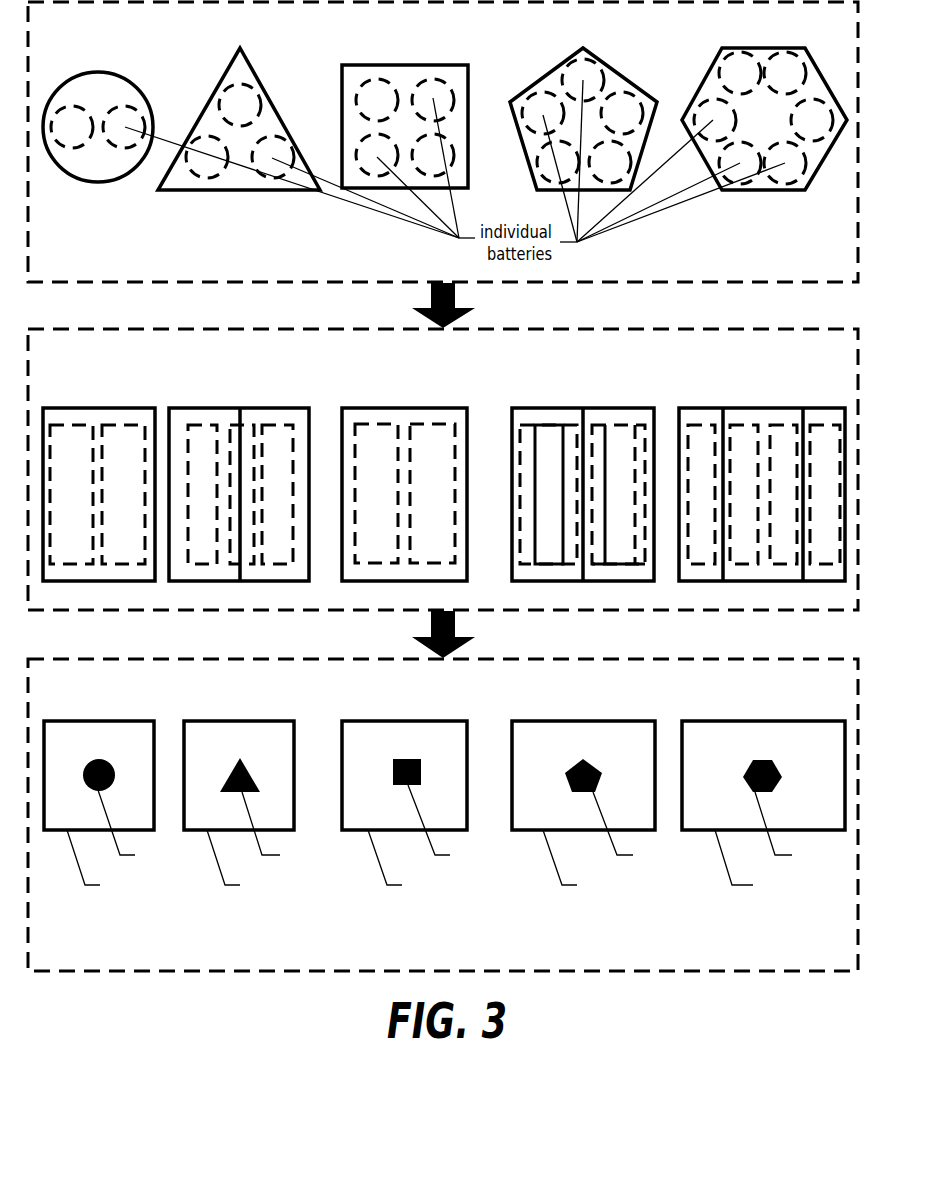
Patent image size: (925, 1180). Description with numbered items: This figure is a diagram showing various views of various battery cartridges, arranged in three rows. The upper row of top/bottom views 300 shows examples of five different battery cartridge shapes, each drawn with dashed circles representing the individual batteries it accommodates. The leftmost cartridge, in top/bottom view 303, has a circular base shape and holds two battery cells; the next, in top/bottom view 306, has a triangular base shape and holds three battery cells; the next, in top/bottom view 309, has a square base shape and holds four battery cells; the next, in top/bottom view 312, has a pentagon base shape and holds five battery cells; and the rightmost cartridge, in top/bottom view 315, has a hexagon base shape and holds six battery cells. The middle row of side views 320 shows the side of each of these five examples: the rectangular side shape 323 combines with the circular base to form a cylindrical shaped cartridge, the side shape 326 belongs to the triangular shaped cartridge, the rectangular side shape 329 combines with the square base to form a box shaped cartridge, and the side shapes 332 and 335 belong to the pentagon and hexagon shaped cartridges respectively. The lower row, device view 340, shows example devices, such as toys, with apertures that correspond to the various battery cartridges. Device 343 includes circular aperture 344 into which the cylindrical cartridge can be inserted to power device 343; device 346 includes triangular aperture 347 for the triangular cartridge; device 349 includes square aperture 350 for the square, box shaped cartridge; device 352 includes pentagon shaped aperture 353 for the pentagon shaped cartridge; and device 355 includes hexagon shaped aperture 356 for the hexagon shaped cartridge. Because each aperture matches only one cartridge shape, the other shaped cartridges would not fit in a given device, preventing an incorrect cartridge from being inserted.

The top/bottom views 300 is at (458, 55).
The top/bottom view of circular cartridge 303 is at (104, 155).
The top/bottom view of triangular cartridge 306 is at (239, 147).
The top/bottom view of square cartridge 309 is at (395, 159).
The top/bottom view of pentagon cartridge 312 is at (591, 162).
The top/bottom view of hexagon cartridge 315 is at (764, 151).
The side views 320 is at (458, 385).
The rectangular side shape 323 is at (104, 474).
The side shape of triangular cartridge 326 is at (239, 474).
The rectangular side shape 329 is at (387, 474).
The side shape of pentagon cartridge 332 is at (583, 475).
The side shape of hexagon cartridge 335 is at (762, 475).
The device view 340 is at (458, 960).
The device 343 is at (123, 780).
The circular aperture 344 is at (143, 776).
The device 346 is at (263, 780).
The triangular aperture 347 is at (281, 776).
The device 349 is at (430, 780).
The square aperture 350 is at (455, 776).
The device 352 is at (602, 780).
The pentagon shaped aperture 353 is at (629, 776).
The device 355 is at (767, 780).
The hexagon shaped aperture 356 is at (775, 765).